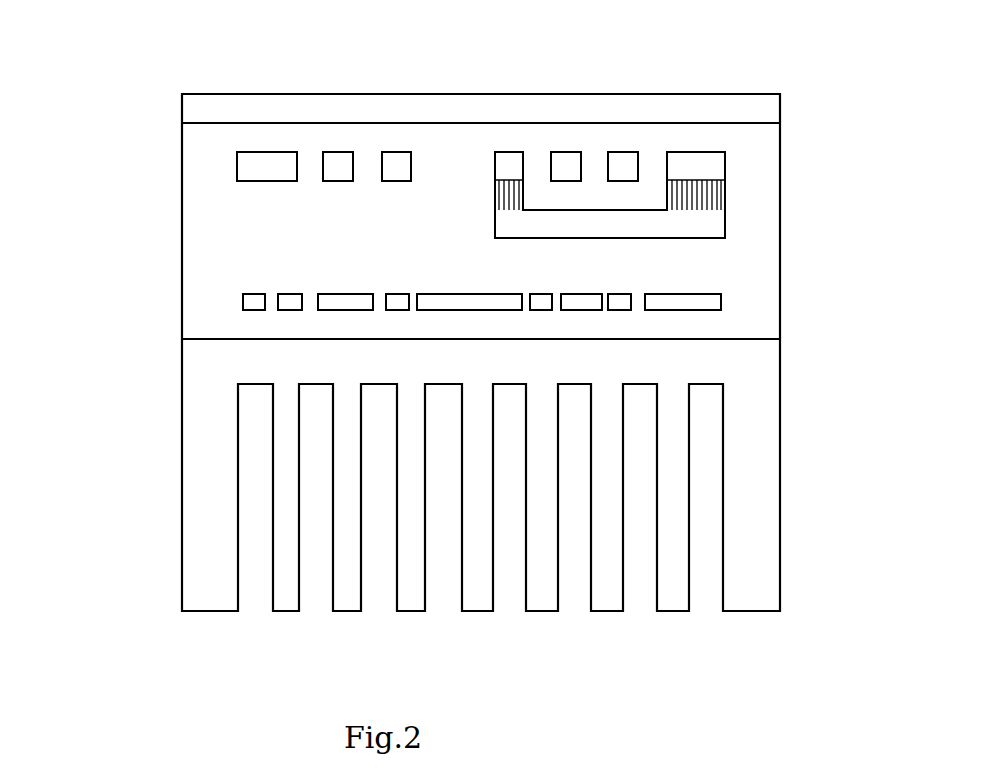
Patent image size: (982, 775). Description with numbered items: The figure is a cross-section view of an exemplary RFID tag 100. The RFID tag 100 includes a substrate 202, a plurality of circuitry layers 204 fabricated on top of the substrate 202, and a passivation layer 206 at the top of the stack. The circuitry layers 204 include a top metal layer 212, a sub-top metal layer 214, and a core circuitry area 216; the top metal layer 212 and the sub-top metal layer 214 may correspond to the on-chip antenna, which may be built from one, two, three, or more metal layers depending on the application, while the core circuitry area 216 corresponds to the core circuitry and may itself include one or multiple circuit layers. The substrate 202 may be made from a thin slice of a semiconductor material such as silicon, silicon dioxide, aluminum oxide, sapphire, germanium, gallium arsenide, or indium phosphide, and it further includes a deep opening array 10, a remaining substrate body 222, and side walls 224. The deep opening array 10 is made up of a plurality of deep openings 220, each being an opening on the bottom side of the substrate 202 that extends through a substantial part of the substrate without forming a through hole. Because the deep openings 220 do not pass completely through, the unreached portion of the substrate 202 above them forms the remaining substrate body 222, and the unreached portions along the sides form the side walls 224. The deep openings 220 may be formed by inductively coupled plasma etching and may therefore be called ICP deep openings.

The RFID tag 100 is at (202, 64).
The deep opening array 10 is at (380, 615).
The substrate 202 is at (449, 516).
The circuitry layers 204 is at (449, 182).
The passivation layer 206 is at (200, 111).
The top metal layer 212 is at (338, 160).
The sub-top metal layer 214 is at (598, 227).
The core circuitry area 216 is at (704, 285).
The deep openings 220 is at (503, 557).
The remaining substrate body 222 is at (582, 359).
The side walls 224 is at (753, 493).